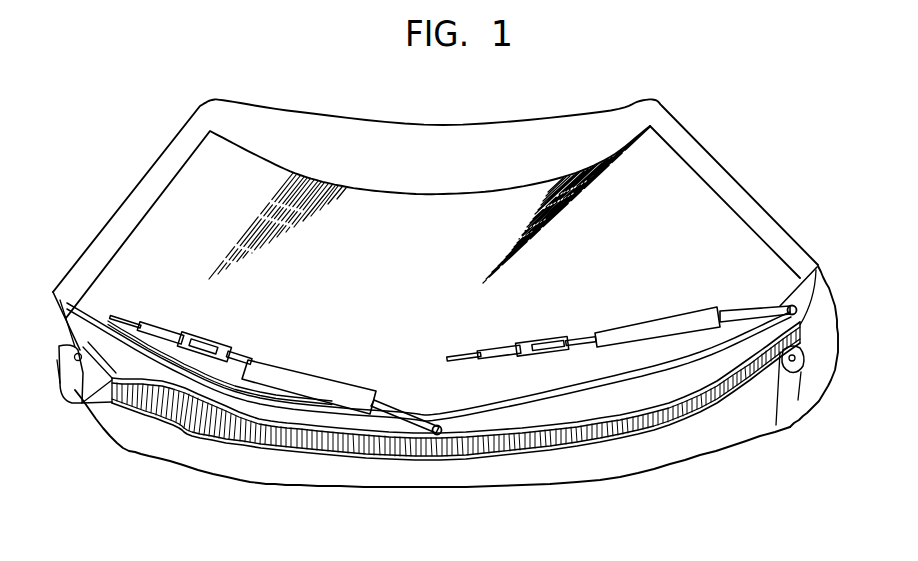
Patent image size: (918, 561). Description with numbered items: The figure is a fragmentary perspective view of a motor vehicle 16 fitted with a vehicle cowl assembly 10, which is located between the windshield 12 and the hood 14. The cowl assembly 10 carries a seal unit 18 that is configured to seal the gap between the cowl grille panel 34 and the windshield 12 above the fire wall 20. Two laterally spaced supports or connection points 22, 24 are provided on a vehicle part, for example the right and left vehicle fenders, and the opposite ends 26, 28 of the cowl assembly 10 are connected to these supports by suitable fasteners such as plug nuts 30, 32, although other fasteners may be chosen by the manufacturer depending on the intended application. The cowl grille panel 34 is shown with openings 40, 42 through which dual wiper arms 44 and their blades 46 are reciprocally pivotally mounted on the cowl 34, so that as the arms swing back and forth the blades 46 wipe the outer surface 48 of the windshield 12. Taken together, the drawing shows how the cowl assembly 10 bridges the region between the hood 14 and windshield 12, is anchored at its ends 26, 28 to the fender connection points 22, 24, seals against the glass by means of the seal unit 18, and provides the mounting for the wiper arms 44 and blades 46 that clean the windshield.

The vehicle cowl assembly 10 is at (111, 409).
The windshield 12 is at (710, 178).
The hood 14 is at (160, 455).
The motor vehicle 16 is at (835, 401).
The seal unit 18 is at (784, 282).
The fire wall 20 is at (784, 385).
The support or connection point 22 is at (821, 288).
The support or connection point 24 is at (85, 386).
The end of cowl assembly 26 is at (57, 358).
The end of cowl assembly 28 is at (797, 378).
The plug nut 30 is at (800, 356).
The plug nut 32 is at (82, 345).
The cowl grille panel 34 is at (550, 461).
The opening 40 is at (434, 424).
The opening 42 is at (786, 304).
The wiper arm 44 is at (308, 365).
The wiper blade 46 is at (128, 320).
The outer surface of windshield 48 is at (185, 172).